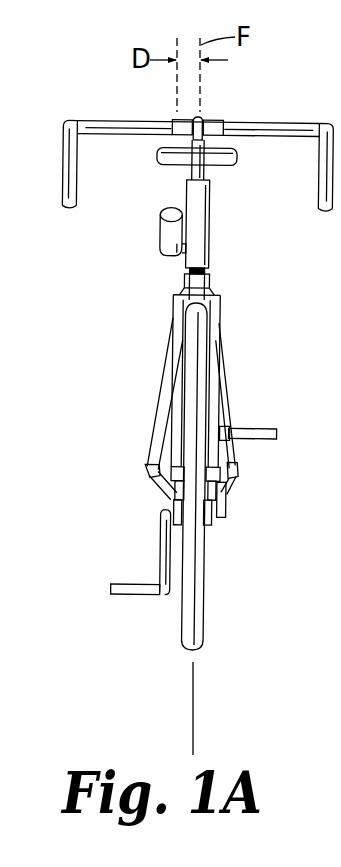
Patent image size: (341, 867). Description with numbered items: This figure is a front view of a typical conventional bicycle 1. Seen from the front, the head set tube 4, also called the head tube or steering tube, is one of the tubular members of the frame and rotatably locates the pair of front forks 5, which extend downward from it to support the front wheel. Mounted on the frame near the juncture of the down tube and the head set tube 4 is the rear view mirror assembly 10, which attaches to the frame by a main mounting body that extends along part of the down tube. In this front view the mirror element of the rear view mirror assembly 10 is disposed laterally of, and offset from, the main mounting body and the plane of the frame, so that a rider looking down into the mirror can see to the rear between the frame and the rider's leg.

The bicycle 1 is at (146, 684).
The head set tube 4 is at (201, 238).
The front forks 5 is at (217, 318).
The rear view mirror assembly 10 is at (148, 242).